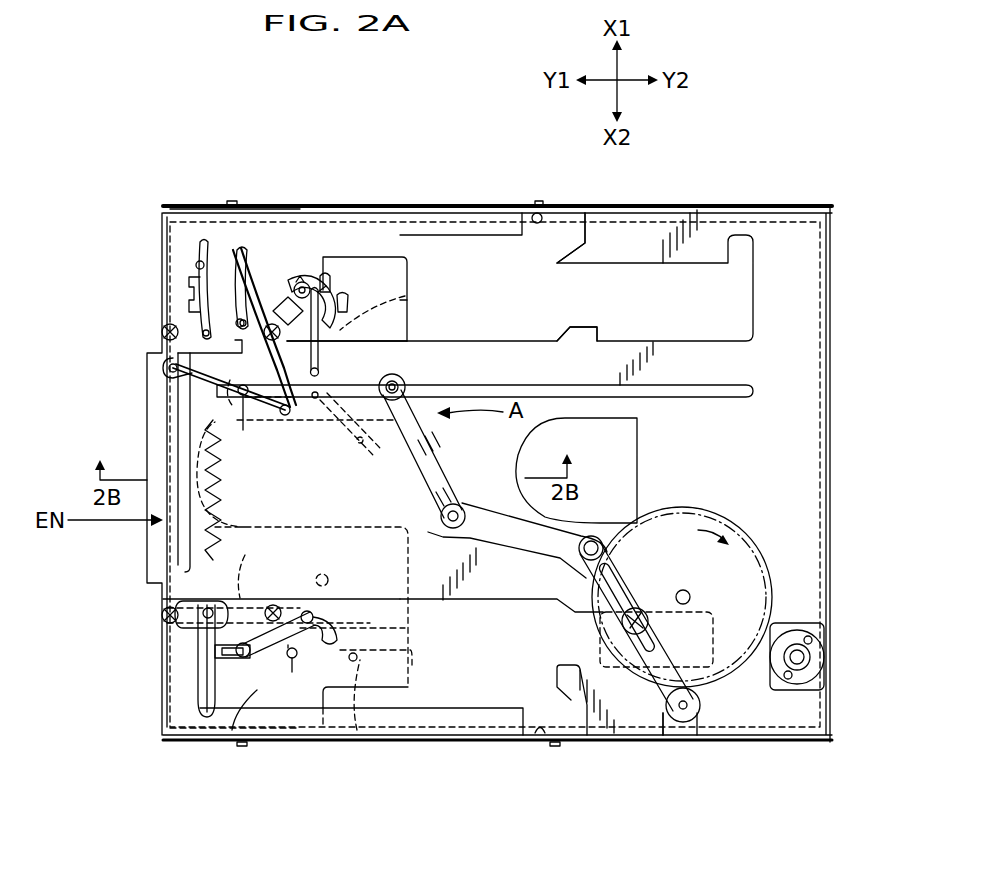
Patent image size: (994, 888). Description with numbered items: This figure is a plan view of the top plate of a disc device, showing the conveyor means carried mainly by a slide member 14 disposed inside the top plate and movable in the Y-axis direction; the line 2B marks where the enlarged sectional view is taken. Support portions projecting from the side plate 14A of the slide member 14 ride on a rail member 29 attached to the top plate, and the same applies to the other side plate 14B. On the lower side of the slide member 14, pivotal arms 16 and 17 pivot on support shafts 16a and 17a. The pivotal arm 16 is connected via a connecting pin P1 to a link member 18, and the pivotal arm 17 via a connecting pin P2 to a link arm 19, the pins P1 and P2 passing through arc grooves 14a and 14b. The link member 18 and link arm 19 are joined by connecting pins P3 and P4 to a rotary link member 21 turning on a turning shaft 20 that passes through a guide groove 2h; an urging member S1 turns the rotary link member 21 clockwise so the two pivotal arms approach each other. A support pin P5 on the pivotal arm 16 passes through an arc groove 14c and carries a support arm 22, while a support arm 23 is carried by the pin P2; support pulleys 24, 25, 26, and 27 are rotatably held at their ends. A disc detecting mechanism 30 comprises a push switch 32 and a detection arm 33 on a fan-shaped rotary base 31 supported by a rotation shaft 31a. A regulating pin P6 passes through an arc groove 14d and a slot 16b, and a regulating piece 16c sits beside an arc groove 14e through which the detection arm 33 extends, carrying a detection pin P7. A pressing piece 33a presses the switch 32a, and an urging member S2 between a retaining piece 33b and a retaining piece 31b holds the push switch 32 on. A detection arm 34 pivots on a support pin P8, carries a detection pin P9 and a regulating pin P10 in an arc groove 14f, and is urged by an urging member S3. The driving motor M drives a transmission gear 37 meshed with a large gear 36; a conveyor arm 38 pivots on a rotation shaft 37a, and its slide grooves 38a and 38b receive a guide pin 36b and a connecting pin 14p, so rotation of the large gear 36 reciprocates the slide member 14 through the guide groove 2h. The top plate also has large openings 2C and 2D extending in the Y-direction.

The slide member 14 is at (405, 257).
The side plate 14A is at (200, 228).
The side plate 14B is at (190, 728).
The arc groove 14a is at (238, 207).
The arc groove 14b is at (200, 690).
The arc groove 14c is at (190, 290).
The arc groove 14d is at (400, 256).
The arc groove 14e is at (408, 303).
The arc groove 14f is at (338, 628).
The connecting pin 14p is at (404, 387).
The pivotal arm 16 is at (405, 268).
The support shaft 16a is at (405, 293).
The slot 16b is at (338, 290).
The regulating piece 16c is at (405, 338).
The pivotal arm 17 is at (357, 732).
The support shaft 17a is at (373, 657).
The link member 18 is at (284, 420).
The link arm 19 is at (178, 435).
The turning shaft 20 is at (255, 403).
The rotary link member 21 is at (220, 405).
The support arm 22 is at (215, 290).
The support arm 23 is at (237, 563).
The support pulley 24 is at (166, 336).
The support pulley 25 is at (228, 204).
The support pulley 26 is at (162, 615).
The support pulley 27 is at (273, 605).
The rail member 29 is at (537, 210).
The disc detecting mechanism 30 is at (241, 248).
The rotary base 31 is at (260, 273).
The rotation shaft 31a is at (322, 272).
The retaining piece 31b is at (283, 290).
The push switch 32 is at (318, 275).
The switch 32a is at (304, 408).
The detection arm 33 is at (345, 415).
The pressing piece 33a is at (320, 368).
The retaining piece 33b is at (390, 378).
The detection arm 34 is at (345, 599).
The large gear 36 is at (700, 510).
The guide pin 36b is at (658, 590).
The transmission gear 37 is at (690, 723).
The rotation shaft 37a is at (673, 725).
The conveyor arm 38 is at (502, 540).
The slide groove 38a is at (690, 625).
The slide groove 38b is at (428, 455).
The opening 2C is at (667, 340).
The opening 2D is at (478, 600).
The guide groove 2h is at (577, 385).
The section line 2B is at (576, 470).
The driving motor M is at (815, 650).
The connecting pin P1 is at (198, 262).
The connecting pin P2 is at (210, 608).
The connecting pin P3 is at (316, 399).
The connecting pin P4 is at (166, 372).
The support pin P5 is at (238, 322).
The regulating pin P6 is at (310, 292).
The detection pin P7 is at (364, 443).
The support pin P8 is at (292, 660).
The detection pin P9 is at (328, 578).
The regulating pin P10 is at (307, 610).
The urging member S1 is at (218, 495).
The urging member S2 is at (305, 282).
The urging member S3 is at (238, 735).